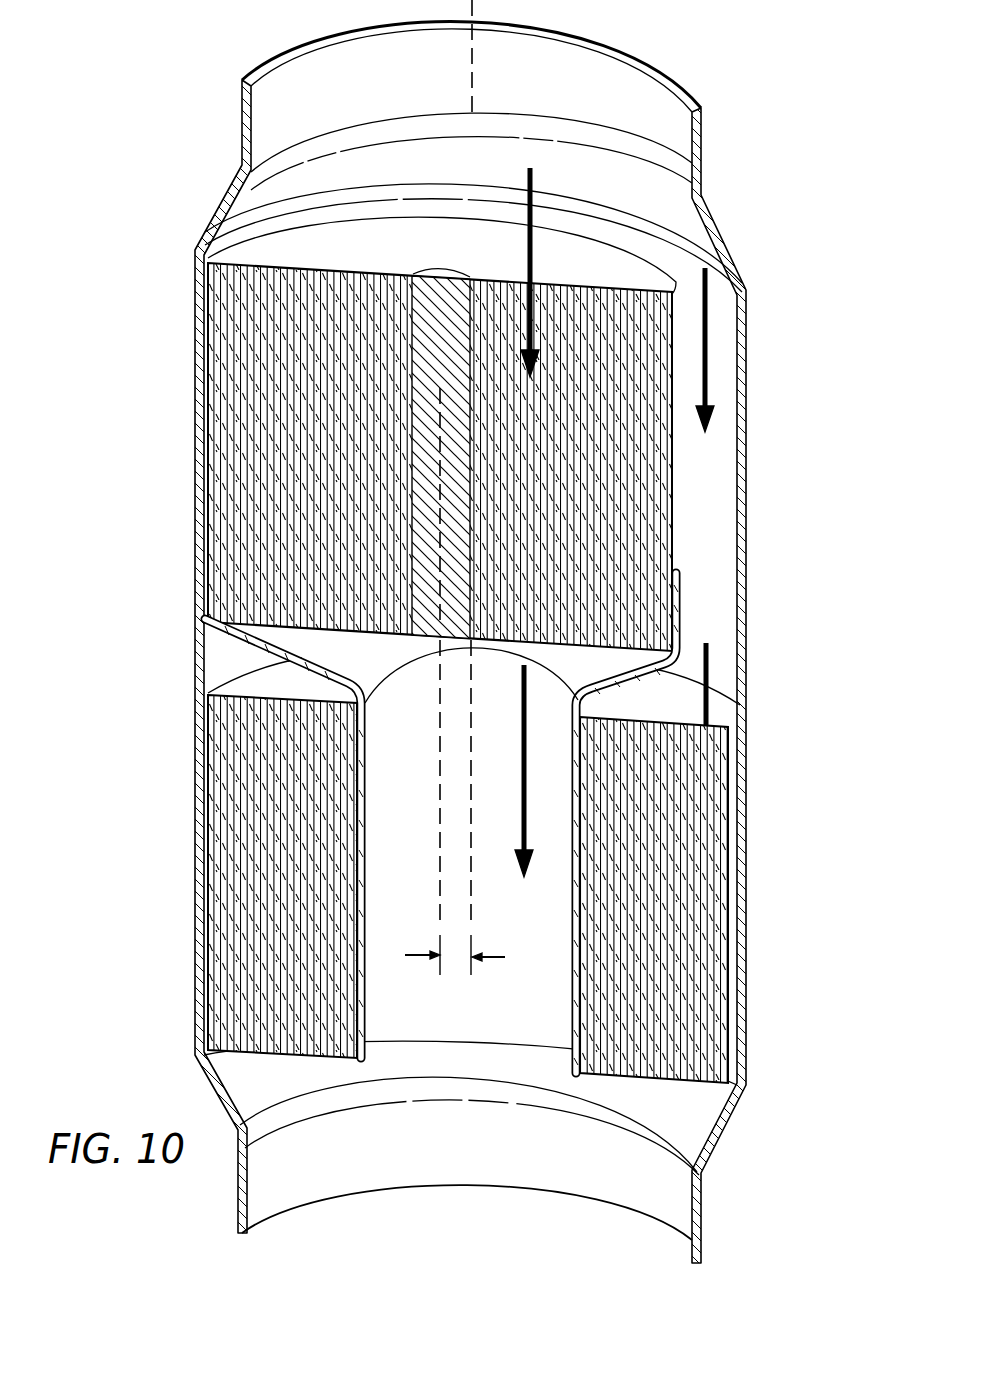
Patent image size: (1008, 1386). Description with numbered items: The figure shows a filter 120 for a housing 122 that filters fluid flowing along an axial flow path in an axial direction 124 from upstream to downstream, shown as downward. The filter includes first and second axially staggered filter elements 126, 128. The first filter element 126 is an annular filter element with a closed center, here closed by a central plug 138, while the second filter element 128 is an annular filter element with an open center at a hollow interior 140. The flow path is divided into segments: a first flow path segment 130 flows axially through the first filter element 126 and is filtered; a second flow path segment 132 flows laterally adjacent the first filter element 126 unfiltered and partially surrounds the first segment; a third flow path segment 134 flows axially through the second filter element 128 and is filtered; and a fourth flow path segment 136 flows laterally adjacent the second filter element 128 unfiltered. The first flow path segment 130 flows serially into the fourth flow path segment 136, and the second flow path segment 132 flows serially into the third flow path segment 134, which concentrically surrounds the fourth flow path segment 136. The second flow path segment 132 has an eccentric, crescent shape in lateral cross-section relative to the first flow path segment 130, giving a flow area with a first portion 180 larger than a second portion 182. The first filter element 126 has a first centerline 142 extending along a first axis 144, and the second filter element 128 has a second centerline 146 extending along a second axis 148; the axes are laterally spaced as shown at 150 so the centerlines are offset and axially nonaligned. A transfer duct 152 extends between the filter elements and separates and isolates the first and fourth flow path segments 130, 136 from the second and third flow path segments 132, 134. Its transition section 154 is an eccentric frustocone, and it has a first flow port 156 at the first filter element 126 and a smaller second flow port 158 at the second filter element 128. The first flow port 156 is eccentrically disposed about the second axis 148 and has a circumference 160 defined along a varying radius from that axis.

The filter 120 is at (172, 188).
The housing 122 is at (196, 298).
The axial direction 124 is at (472, 85).
The first filter element 126 is at (235, 395).
The second filter element 128 is at (218, 857).
The first flow path segment 130 is at (530, 262).
The second flow path segment 132 is at (738, 343).
The third flow path segment 134 is at (680, 664).
The fourth flow path segment 136 is at (525, 818).
The central plug 138 is at (430, 347).
The hollow interior 140 is at (400, 708).
The first centerline 142 is at (437, 480).
The first axis 144 is at (438, 912).
The second centerline 146 is at (471, 783).
The second axis 148 is at (472, 917).
The lateral spacing 150 is at (456, 957).
The transfer duct 152 is at (648, 685).
The transition section 154 is at (608, 684).
The first flow port 156 is at (740, 702).
The second flow port 158 is at (573, 687).
The circumference 160 is at (200, 664).
The first portion 180 is at (688, 262).
The second portion 182 is at (393, 208).